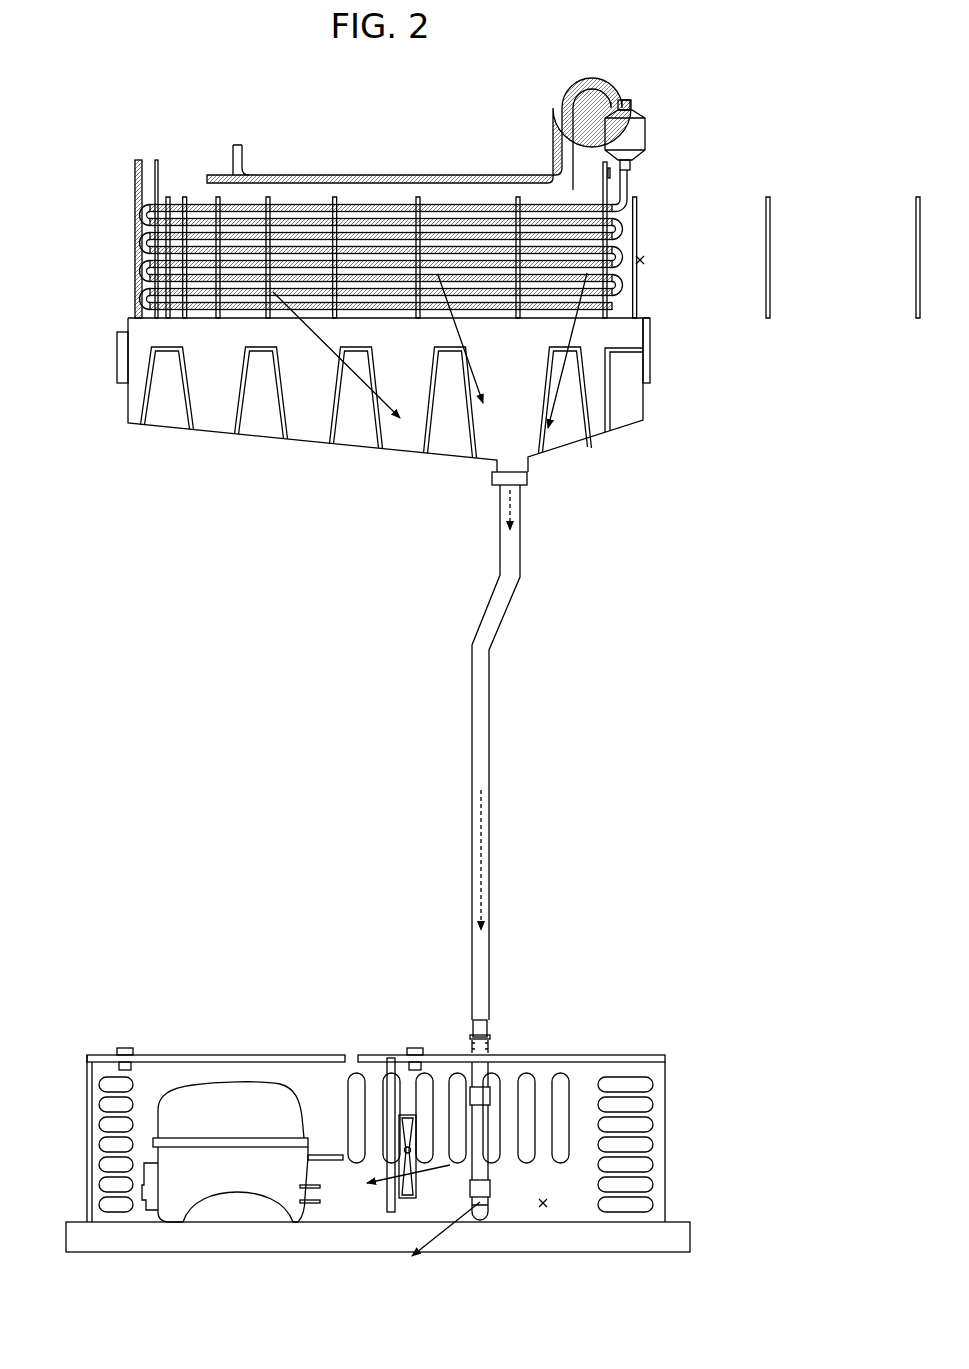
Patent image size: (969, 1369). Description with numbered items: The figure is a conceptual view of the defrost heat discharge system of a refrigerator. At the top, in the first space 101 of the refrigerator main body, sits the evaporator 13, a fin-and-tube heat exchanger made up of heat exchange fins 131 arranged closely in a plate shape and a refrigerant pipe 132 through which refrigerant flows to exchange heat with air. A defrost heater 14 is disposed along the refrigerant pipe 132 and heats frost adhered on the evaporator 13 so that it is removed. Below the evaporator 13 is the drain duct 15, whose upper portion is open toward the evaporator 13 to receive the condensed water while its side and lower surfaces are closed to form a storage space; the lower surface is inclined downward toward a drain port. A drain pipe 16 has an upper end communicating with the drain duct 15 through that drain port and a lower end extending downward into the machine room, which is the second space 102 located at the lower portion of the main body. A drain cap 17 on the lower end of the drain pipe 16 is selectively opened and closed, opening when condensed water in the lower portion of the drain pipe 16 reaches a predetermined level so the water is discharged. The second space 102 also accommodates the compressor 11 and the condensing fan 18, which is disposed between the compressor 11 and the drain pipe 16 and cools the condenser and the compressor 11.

The compressor 11 is at (233, 1105).
The evaporator 13 is at (555, 198).
The heat exchange fins 131 is at (187, 200).
The refrigerant pipe 132 is at (207, 205).
The defrost heater 14 is at (135, 180).
The drain duct 15 is at (640, 390).
The drain pipe 16 is at (490, 710).
The drain cap 17 is at (480, 1218).
The condensing fan 18 is at (410, 1117).
The first space 101 is at (645, 260).
The second space 102 is at (543, 1208).